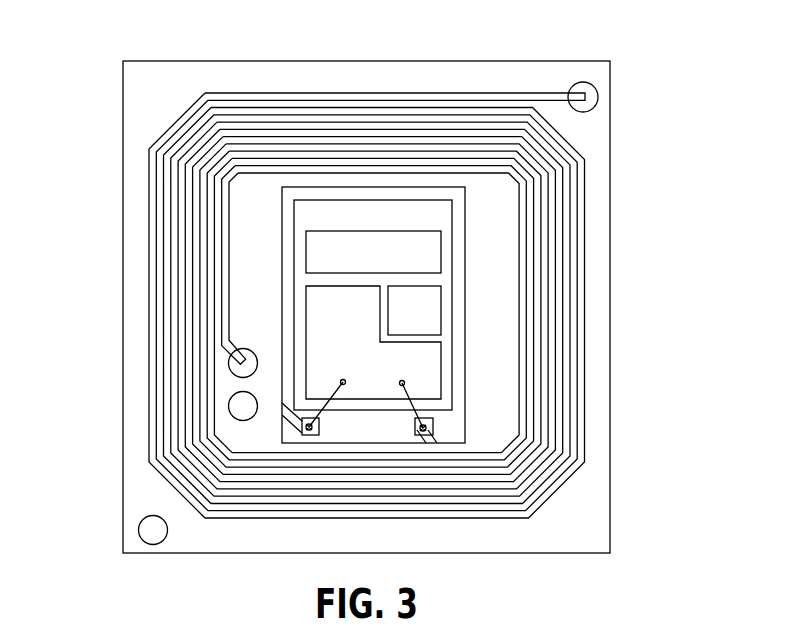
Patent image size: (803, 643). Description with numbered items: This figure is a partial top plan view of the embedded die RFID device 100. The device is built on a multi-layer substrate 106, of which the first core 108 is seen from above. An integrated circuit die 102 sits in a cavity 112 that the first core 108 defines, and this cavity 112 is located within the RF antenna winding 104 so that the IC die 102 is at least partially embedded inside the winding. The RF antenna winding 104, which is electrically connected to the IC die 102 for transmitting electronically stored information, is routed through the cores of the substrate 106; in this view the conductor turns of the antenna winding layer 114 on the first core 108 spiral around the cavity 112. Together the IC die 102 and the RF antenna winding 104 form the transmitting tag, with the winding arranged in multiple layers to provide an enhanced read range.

The embedded die RFID device 100 is at (224, 42).
The integrated circuit die 102 is at (327, 315).
The RF antenna winding 104 is at (580, 420).
The multi-layer substrate 106 is at (616, 502).
The first core 108 is at (593, 143).
The cavity 112 is at (464, 315).
The antenna winding layer 114 is at (153, 393).